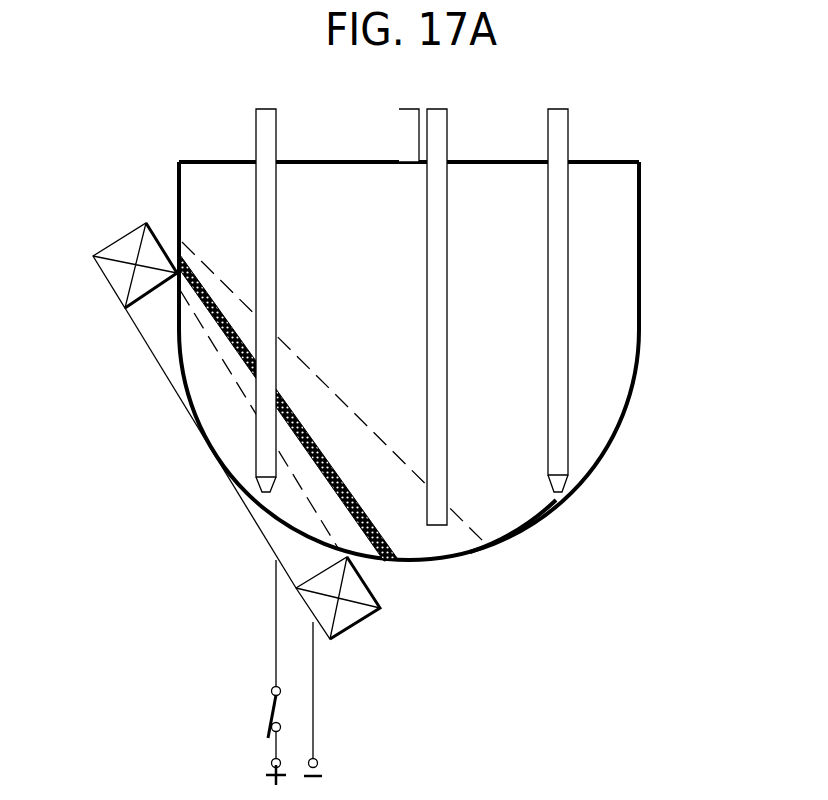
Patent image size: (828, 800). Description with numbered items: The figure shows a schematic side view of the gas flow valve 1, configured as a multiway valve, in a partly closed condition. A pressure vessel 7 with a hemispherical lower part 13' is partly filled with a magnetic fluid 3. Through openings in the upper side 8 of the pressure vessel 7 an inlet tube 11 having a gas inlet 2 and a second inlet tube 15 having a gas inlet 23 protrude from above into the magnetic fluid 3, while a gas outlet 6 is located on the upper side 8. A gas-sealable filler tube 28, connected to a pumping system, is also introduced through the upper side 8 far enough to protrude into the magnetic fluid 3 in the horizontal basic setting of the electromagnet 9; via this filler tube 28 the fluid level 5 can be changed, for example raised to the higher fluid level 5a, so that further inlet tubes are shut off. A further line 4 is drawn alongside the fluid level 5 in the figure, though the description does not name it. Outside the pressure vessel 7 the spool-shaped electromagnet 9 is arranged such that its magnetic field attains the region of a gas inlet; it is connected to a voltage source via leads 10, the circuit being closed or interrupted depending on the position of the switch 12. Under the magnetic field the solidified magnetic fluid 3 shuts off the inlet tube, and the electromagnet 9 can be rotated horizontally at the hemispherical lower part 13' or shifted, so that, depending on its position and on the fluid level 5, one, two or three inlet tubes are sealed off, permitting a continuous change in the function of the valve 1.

The valve 1 is at (179, 156).
The gas inlet 2 is at (561, 485).
The magnetic fluid 3 is at (228, 382).
The separator edge 4 is at (311, 433).
The fluid level 5 is at (293, 410).
The fluid level 5a is at (375, 434).
The gas outlet 6 is at (399, 126).
The pressure vessel 7 is at (641, 241).
The upper side 8 is at (626, 154).
The electromagnet 9 is at (120, 287).
The leads 10 is at (276, 628).
The inlet tube 11 is at (556, 144).
The switch 12 is at (270, 711).
The hemispherical lower part 13' is at (518, 547).
The second inlet tube 15 is at (265, 130).
The gas inlet 23 is at (262, 484).
The filler tube 28 is at (440, 142).